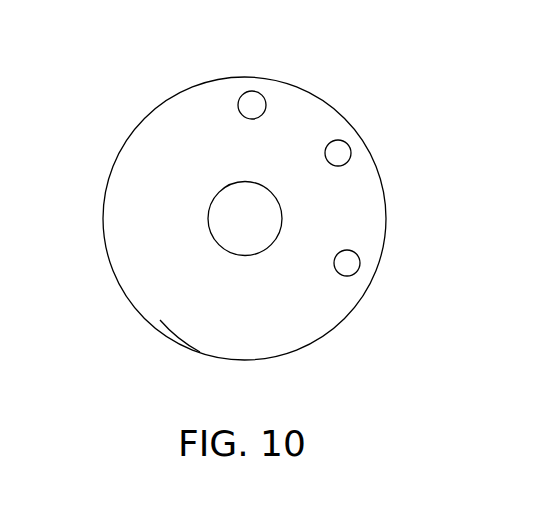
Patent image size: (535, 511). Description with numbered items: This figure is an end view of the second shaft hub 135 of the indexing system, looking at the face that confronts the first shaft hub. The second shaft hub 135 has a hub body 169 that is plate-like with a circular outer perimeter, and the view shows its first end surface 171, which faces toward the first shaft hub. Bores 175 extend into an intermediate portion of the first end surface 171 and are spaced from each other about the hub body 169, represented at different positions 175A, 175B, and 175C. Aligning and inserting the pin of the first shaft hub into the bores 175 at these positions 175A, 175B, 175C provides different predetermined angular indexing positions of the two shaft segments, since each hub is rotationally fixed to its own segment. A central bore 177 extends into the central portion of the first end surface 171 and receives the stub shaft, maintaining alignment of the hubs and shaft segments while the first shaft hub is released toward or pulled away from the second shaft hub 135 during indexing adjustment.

The second shaft hub 135 is at (330, 350).
The hub body 169 is at (153, 110).
The first end surface 171 is at (194, 337).
The central bore 177 is at (212, 212).
The bores 175 is at (266, 100).
The first bore position 175A is at (252, 104).
The second bore position 175B is at (338, 152).
The third bore position 175C is at (347, 262).